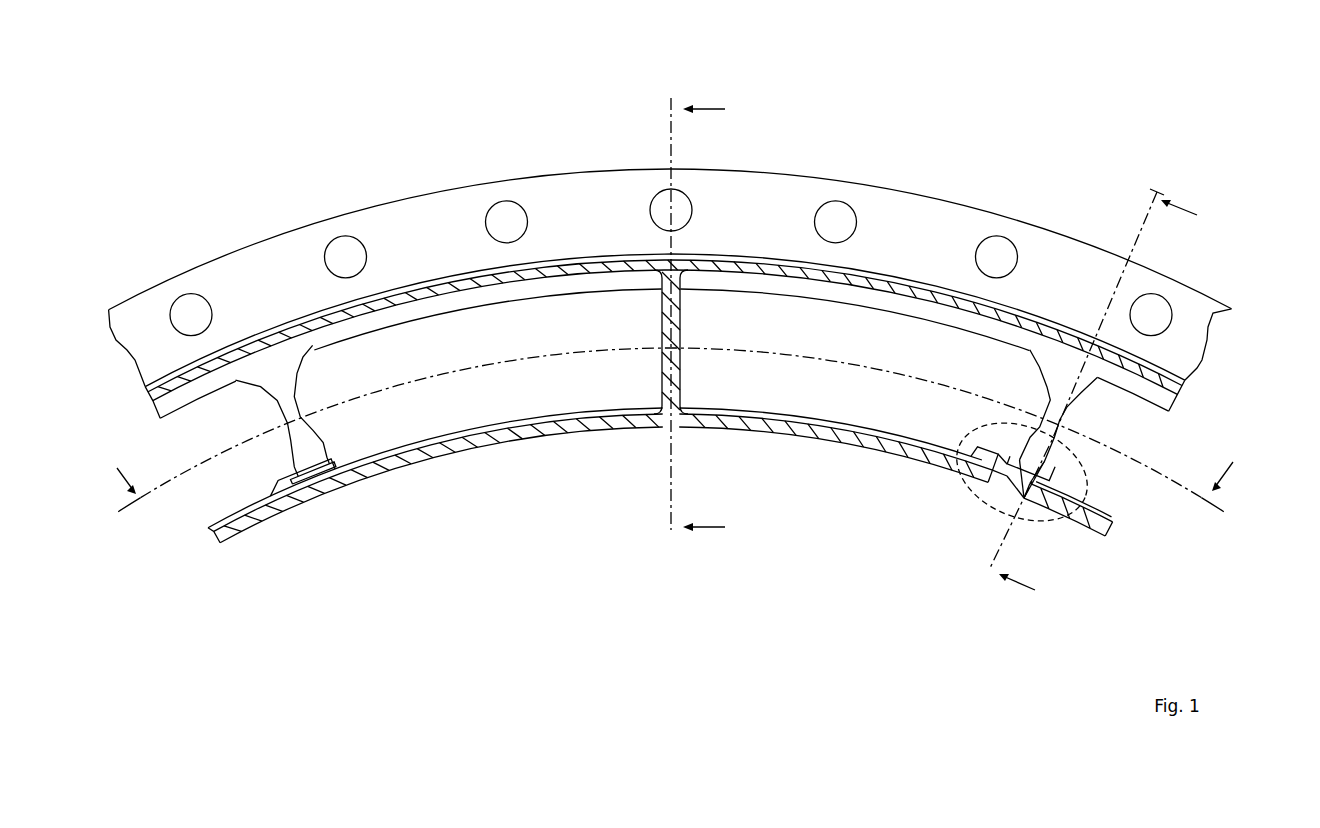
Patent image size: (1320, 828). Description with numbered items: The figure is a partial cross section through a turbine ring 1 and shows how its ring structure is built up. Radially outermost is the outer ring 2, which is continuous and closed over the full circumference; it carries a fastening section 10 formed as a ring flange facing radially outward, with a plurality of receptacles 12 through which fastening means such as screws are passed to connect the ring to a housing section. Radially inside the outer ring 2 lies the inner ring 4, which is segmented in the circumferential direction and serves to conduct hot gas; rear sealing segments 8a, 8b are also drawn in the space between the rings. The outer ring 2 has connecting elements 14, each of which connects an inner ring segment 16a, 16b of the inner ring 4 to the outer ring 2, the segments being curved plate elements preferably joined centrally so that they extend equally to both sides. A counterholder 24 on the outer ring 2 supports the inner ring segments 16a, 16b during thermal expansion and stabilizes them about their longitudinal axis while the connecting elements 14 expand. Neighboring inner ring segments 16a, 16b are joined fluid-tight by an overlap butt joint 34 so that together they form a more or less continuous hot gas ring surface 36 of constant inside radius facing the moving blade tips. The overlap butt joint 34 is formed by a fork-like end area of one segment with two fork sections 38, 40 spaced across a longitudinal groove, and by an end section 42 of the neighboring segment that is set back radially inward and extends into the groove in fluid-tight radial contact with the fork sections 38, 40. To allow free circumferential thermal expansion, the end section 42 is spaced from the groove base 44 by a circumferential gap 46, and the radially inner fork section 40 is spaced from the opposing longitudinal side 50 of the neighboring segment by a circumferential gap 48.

The turbine ring 1 is at (121, 119).
The outer ring 2 is at (1180, 371).
The inner ring 4 is at (435, 532).
The rear sealing segment 8a is at (463, 412).
The rear sealing segment 8b is at (839, 403).
The fastening section 10 is at (1203, 310).
The receptacle 12 is at (1151, 317).
The connecting element 14 is at (675, 327).
The inner ring segment 16a is at (518, 433).
The inner ring segment 16b is at (1083, 502).
The counterholder 24 is at (1063, 415).
The overlap butt joint 34 is at (967, 485).
The hot gas ring surface 36 is at (790, 430).
The fork section 38 is at (1037, 473).
The fork section 40 is at (997, 493).
The end section 42 is at (1030, 488).
The groove base 44 is at (997, 457).
The circumferential gap 46 is at (990, 480).
The circumferential gap 48 is at (1005, 510).
The longitudinal side 50 is at (1027, 498).